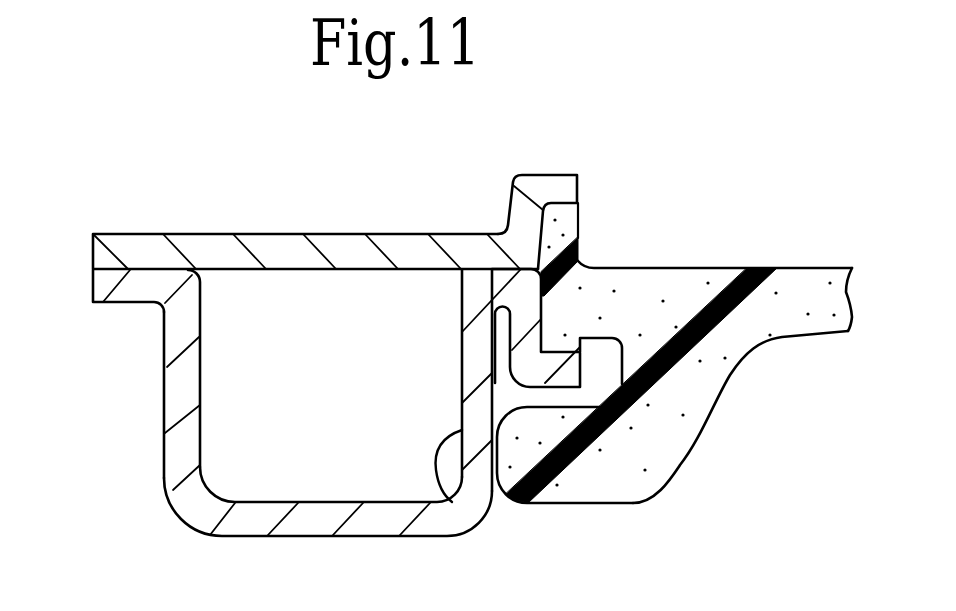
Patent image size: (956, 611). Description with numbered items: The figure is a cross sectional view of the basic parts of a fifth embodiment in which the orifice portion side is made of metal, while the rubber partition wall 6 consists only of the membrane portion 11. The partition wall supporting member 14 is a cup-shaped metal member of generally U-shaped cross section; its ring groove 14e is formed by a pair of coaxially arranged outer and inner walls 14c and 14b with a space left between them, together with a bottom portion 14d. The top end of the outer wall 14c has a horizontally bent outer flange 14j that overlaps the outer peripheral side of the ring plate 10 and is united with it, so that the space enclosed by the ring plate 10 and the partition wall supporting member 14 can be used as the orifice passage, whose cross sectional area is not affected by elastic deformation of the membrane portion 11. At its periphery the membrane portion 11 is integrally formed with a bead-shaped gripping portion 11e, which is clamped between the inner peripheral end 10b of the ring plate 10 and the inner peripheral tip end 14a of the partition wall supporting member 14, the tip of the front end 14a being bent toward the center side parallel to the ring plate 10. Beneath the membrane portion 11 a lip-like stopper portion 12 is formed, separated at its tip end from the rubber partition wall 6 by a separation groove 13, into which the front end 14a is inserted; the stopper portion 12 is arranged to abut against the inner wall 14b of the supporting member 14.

The rubber partition wall 6 is at (866, 296).
The ring plate 10 is at (335, 194).
The inner peripheral end of the ring plate 10b is at (538, 190).
The membrane portion 11 is at (793, 292).
The bead-shaped gripping portion 11e is at (567, 228).
The stopper portion 12 is at (573, 483).
The separation groove 13 is at (604, 391).
The partition wall supporting member 14 is at (368, 411).
The inner peripheral tip end of the partition wall supporting member 14a is at (583, 372).
The inner wall 14b is at (438, 505).
The outer wall 14c is at (167, 392).
The bottom portion 14d is at (322, 522).
The ring groove 14e is at (362, 395).
The outer flange 14j is at (102, 287).